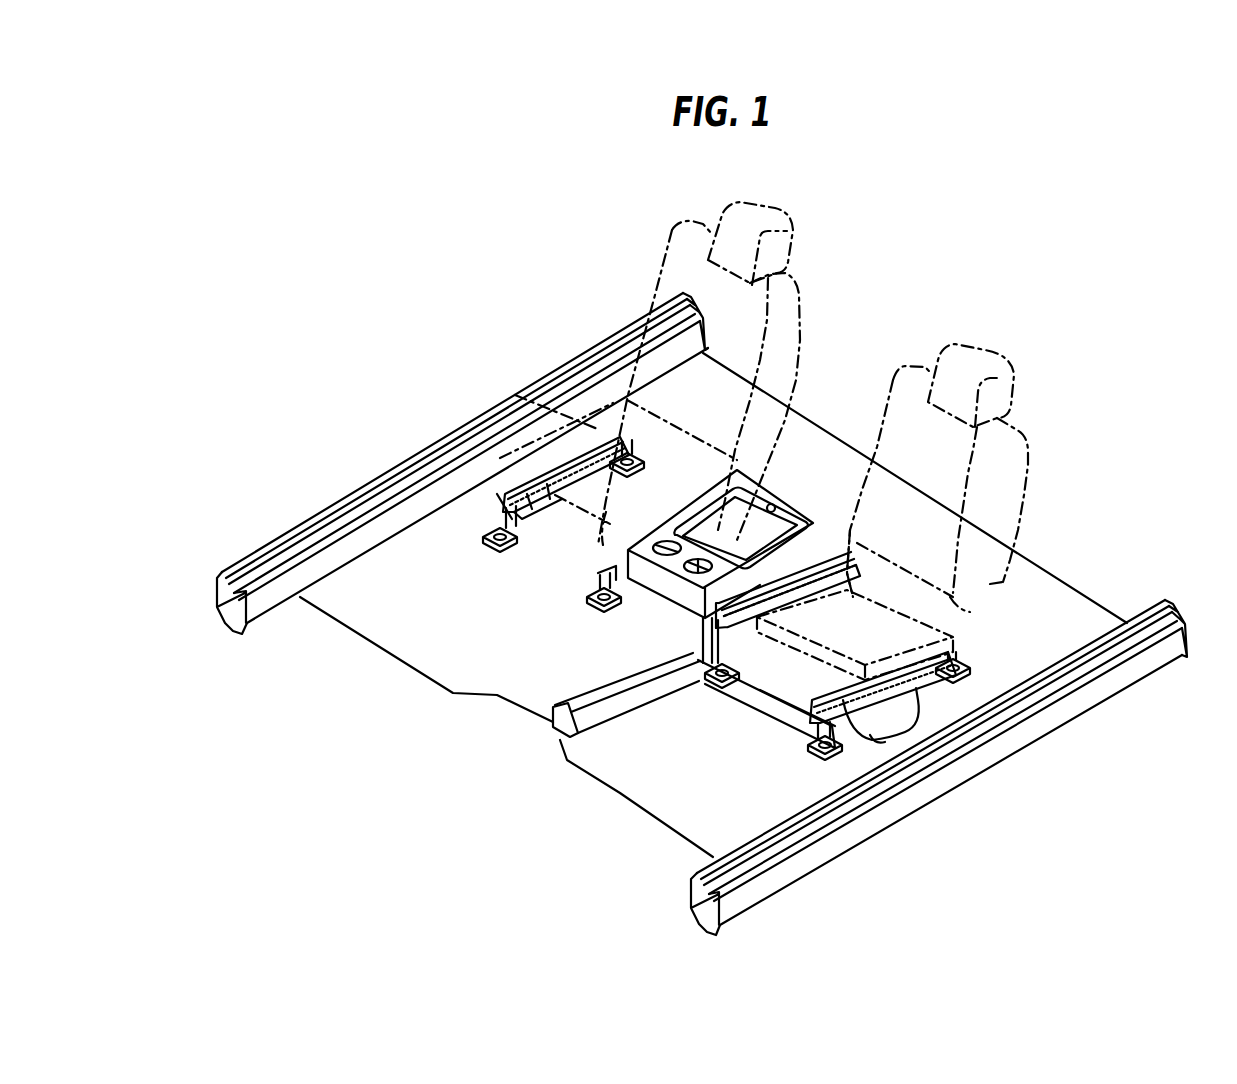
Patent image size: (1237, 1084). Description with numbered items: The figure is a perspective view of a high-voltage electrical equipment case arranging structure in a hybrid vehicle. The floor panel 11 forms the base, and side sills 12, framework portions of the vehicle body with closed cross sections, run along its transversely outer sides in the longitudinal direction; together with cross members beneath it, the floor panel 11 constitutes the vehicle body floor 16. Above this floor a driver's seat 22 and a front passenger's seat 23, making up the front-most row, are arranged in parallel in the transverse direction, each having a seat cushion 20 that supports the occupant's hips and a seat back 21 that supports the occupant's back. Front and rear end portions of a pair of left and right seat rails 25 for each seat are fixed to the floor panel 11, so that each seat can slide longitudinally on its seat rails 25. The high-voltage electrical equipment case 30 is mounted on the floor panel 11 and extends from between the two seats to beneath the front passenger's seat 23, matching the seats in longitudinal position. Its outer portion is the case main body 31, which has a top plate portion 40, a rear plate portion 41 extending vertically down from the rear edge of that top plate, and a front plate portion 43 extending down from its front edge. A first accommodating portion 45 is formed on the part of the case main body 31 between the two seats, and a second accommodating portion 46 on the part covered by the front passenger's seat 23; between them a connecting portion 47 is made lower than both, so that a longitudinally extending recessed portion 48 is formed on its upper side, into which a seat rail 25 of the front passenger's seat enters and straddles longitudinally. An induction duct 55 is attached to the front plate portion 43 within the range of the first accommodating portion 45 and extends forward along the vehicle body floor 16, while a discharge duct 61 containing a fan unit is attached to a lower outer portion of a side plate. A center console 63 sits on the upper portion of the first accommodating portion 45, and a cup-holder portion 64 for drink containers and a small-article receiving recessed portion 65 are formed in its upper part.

The floor panel 11 is at (1048, 602).
The side sill 12 is at (322, 500).
The vehicle body floor 16 is at (708, 625).
The seat cushion 20 is at (510, 388).
The seat back 21 is at (652, 278).
The driver's seat 22 is at (655, 248).
The front passenger's seat 23 is at (1040, 439).
The seat rail 25 is at (497, 532).
The high-voltage electrical equipment case 30 is at (766, 736).
The case main body 31 is at (852, 598).
The top plate portion 40 is at (897, 591).
The rear plate portion 41 is at (995, 584).
The front plate portion 43 is at (771, 705).
The first accommodating portion 45 is at (818, 572).
The second accommodating portion 46 is at (838, 612).
The connecting portion 47 is at (699, 656).
The longitudinally extending recessed portion 48 is at (704, 498).
The induction duct 55 is at (624, 648).
The discharge duct 61 is at (884, 713).
The center console 63 is at (697, 498).
The cup-holder portion 64 is at (662, 545).
The small-article receiving recessed portion 65 is at (774, 505).